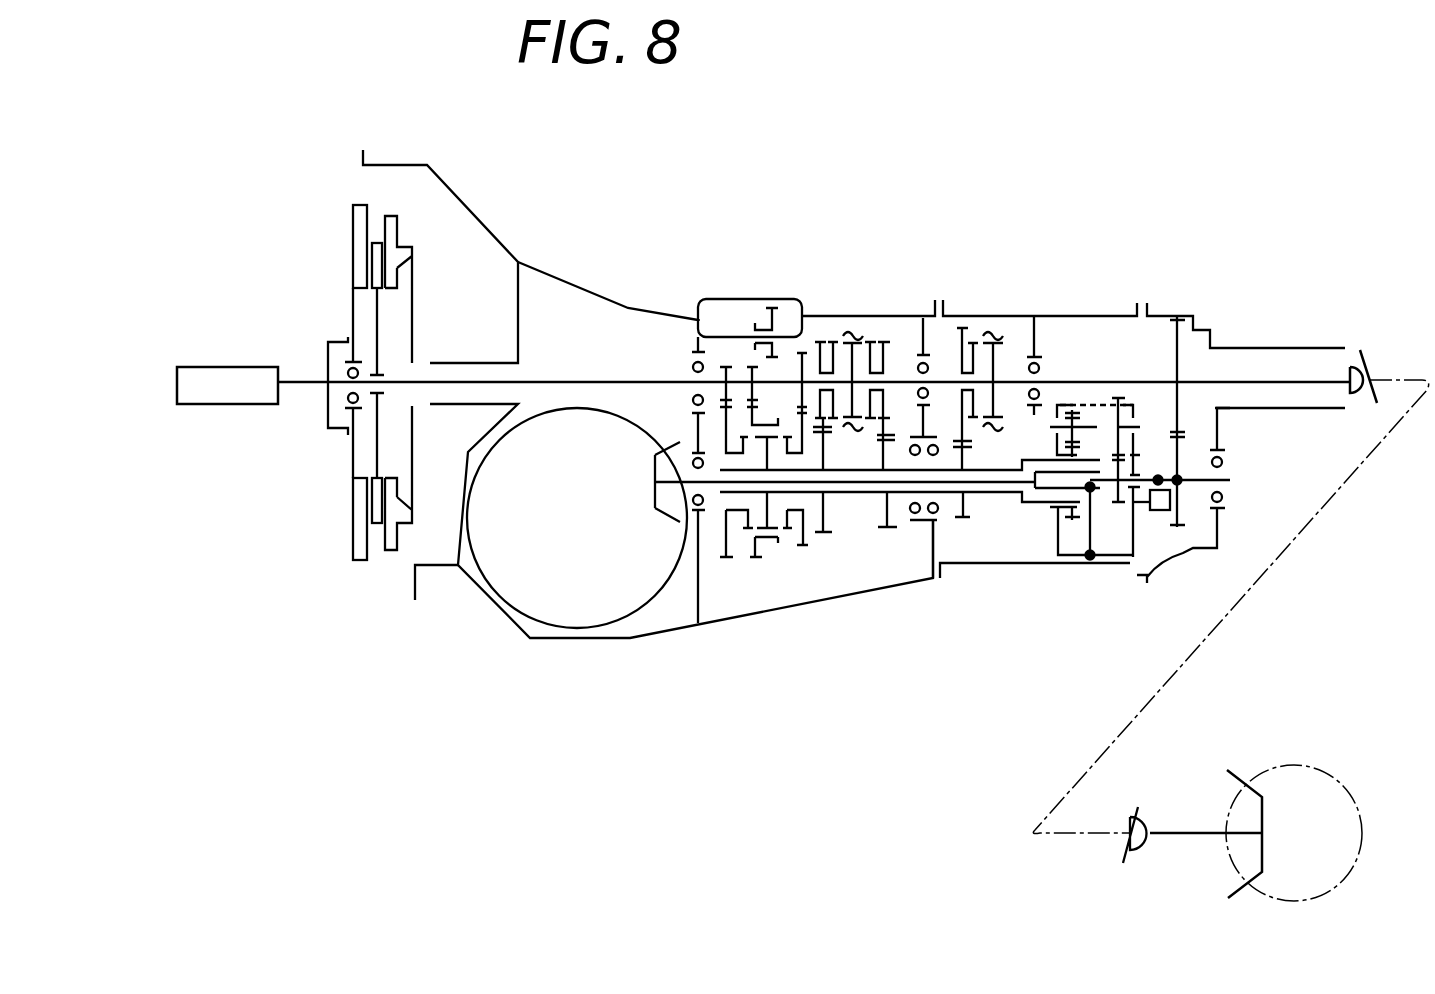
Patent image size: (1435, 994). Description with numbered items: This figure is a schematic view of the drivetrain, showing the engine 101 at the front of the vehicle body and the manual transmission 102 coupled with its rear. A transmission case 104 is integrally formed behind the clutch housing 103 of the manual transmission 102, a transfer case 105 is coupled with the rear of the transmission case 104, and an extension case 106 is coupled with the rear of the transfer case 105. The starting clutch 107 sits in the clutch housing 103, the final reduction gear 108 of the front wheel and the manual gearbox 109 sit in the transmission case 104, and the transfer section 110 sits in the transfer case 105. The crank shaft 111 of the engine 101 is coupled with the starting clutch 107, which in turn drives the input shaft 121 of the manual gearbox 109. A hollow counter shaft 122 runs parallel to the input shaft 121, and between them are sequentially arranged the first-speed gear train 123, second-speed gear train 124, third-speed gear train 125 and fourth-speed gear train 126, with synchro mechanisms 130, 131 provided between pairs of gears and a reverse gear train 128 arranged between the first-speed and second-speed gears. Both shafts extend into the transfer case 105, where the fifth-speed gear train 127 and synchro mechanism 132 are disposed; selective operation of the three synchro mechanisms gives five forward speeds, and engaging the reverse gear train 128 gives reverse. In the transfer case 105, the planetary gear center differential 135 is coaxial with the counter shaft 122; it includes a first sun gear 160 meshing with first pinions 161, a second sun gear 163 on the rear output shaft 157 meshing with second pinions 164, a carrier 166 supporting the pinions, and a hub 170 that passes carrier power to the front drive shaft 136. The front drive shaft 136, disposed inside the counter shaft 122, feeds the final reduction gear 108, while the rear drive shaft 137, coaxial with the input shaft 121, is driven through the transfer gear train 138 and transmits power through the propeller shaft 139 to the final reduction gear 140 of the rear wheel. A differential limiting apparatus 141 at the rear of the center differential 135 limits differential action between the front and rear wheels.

The engine 101 is at (233, 366).
The manual transmission 102 is at (835, 168).
The clutch housing 103 is at (503, 248).
The transmission case 104 is at (633, 305).
The transfer case 105 is at (1037, 357).
The extension case 106 is at (1300, 347).
The starting clutch 107 is at (408, 236).
The final reduction gear of the front wheel 108 is at (660, 600).
The manual gearbox 109 is at (843, 540).
The transfer section 110 is at (1126, 360).
The crank shaft 111 is at (305, 380).
The input shaft 121 is at (588, 378).
The counter shaft 122 is at (855, 493).
The first-speed gear train 123 is at (702, 348).
The second-speed gear train 124 is at (800, 547).
The third-speed gear train 125 is at (820, 343).
The fourth-speed gear train 126 is at (887, 343).
The fifth-speed gear train 127 is at (960, 340).
The reverse gear train 128 is at (757, 320).
The synchro mechanism 130 is at (767, 537).
The synchro mechanism 131 is at (855, 330).
The synchro mechanism 132 is at (993, 330).
The planetary gear center differential 135 is at (1048, 532).
The front drive shaft 136 is at (990, 490).
The rear drive shaft 137 is at (1097, 380).
The transfer gear train 138 is at (1177, 395).
The propeller shaft 139 is at (1277, 558).
The final reduction gear of the rear wheel 140 is at (1338, 777).
The differential limiting apparatus 141 is at (1163, 520).
The rear output shaft 157 is at (1212, 475).
The first sun gear 160 is at (1072, 512).
The first pinion 161 is at (1060, 400).
The second sun gear 163 is at (1118, 508).
The second pinion 164 is at (1120, 400).
The carrier 166 is at (1163, 515).
The hub 170 is at (1098, 560).